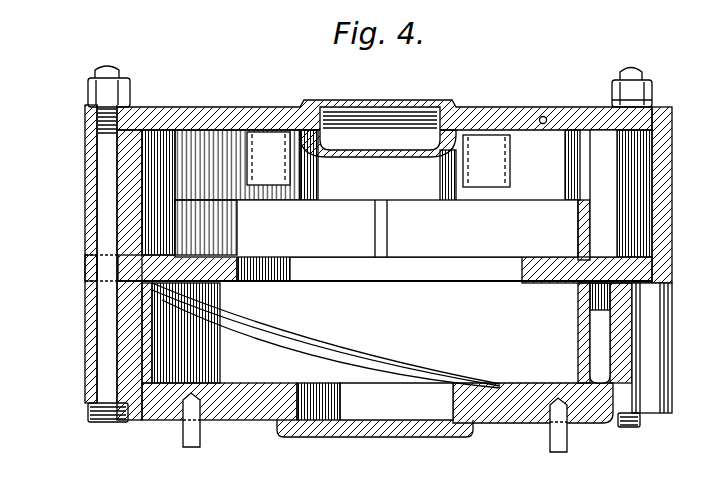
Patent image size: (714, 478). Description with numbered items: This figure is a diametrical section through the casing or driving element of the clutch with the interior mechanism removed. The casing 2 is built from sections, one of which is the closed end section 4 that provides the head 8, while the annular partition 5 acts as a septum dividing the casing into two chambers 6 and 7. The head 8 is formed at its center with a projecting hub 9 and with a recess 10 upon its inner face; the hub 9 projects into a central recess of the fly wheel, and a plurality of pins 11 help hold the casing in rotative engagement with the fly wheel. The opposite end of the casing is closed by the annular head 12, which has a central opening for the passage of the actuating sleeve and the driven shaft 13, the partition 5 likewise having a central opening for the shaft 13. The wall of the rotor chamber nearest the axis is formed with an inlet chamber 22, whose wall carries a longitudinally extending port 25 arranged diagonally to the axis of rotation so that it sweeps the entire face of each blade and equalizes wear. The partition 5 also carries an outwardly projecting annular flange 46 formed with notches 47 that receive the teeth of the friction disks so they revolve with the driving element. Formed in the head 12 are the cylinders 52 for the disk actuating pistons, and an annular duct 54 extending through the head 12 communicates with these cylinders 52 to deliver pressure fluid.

The casing 2 is at (662, 251).
The section 4 is at (85, 356).
The partition 5 is at (85, 267).
The chamber 6 is at (605, 191).
The chamber 7 is at (565, 332).
The head 8 is at (505, 423).
The hub 9 is at (393, 438).
The recess 10 is at (336, 422).
The pins 11 is at (187, 440).
The head 12 is at (588, 121).
The driven shaft 13 is at (660, 196).
The inlet chamber 22 is at (603, 305).
The port 25 is at (348, 360).
The annular flange 46 is at (590, 228).
The notches 47 is at (180, 201).
The cylinder 52 is at (268, 174).
The duct 54 is at (545, 116).